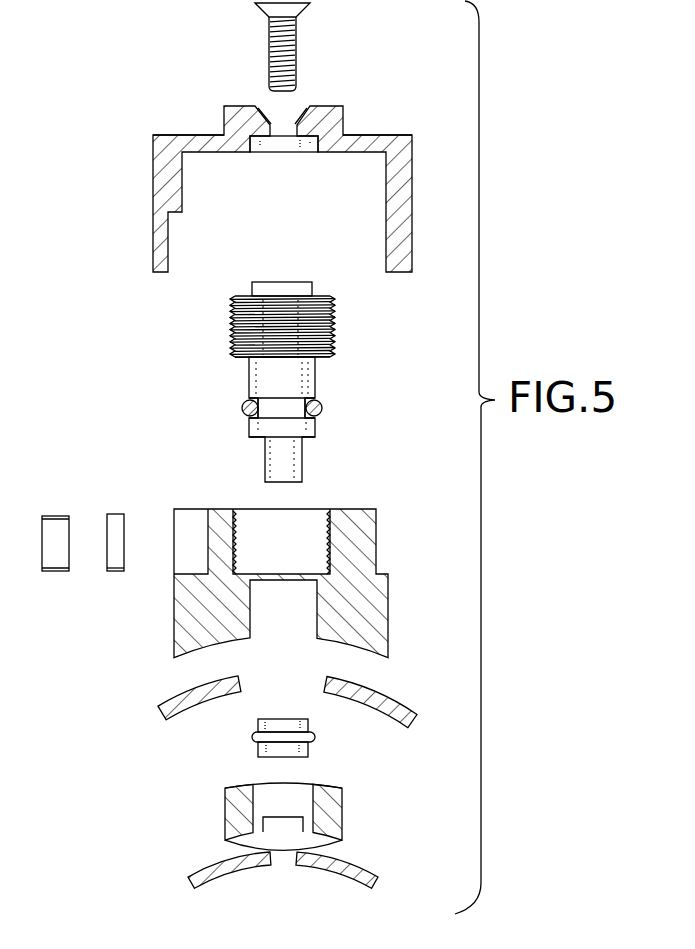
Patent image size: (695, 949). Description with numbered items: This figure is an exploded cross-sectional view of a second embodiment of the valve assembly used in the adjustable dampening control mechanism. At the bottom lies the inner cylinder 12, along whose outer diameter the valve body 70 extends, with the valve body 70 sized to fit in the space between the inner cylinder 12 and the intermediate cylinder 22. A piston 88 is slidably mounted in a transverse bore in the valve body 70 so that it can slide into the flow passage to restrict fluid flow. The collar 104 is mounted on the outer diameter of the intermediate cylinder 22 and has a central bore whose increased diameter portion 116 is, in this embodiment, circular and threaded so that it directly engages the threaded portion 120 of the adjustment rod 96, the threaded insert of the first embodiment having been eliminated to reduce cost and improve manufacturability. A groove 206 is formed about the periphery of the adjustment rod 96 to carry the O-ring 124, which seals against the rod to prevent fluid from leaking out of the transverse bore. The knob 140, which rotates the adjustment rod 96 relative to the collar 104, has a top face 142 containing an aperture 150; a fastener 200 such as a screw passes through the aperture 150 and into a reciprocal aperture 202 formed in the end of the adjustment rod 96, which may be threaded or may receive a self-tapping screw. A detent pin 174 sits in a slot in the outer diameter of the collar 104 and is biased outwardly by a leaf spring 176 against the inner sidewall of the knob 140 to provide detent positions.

The fastener 200 is at (268, 58).
The aperture 150 is at (300, 112).
The top face 142 is at (365, 135).
The knob 140 is at (261, 179).
The reciprocal aperture 202 is at (280, 285).
The threaded portion 120 is at (334, 323).
The adjustment rod 96 is at (287, 359).
The groove 206 is at (323, 405).
The O-ring 124 is at (243, 404).
The increased diameter portion 116 is at (324, 521).
The collar 104 is at (317, 557).
The pin 174 is at (48, 558).
The spring 176 is at (113, 570).
The intermediate cylinder 22 is at (380, 698).
The piston 88 is at (300, 749).
The valve body 70 is at (333, 812).
The inner cylinder 12 is at (350, 870).